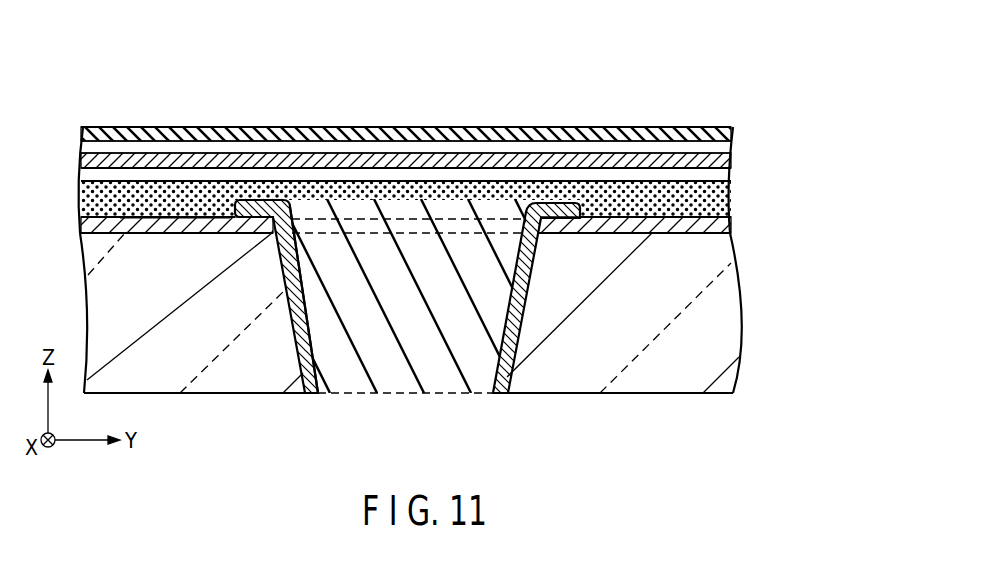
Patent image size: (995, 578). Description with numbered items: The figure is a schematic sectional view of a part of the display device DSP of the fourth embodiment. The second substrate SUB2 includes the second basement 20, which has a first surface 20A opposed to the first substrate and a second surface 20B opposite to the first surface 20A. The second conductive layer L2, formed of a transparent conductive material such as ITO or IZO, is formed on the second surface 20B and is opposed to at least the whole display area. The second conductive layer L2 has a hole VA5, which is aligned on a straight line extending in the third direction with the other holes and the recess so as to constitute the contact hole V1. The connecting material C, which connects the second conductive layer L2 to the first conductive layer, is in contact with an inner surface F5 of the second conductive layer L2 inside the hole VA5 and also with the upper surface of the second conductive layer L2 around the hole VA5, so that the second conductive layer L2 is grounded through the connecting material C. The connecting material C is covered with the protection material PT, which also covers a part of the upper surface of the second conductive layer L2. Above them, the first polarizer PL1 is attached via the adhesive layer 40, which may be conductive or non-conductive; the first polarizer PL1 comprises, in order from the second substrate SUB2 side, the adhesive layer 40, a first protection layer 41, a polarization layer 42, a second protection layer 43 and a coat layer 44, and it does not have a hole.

The display device DSP is at (748, 110).
The coat layer 44 is at (82, 132).
The second protection layer 43 is at (87, 145).
The polarization layer 42 is at (87, 174).
The first polarizer PL1 is at (737, 128).
The first protection layer 41 is at (86, 195).
The adhesive layer 40 is at (80, 214).
The second conductive layer L2 is at (731, 226).
The second surface 20B is at (170, 219).
The second basement 20 is at (738, 288).
The second substrate SUB2 is at (749, 346).
The first surface 20A is at (213, 397).
The contact hole V1 is at (398, 247).
The hole VA5 is at (484, 222).
The inner surface F5 is at (280, 219).
The connecting material C is at (302, 307).
The protection material PT is at (437, 382).